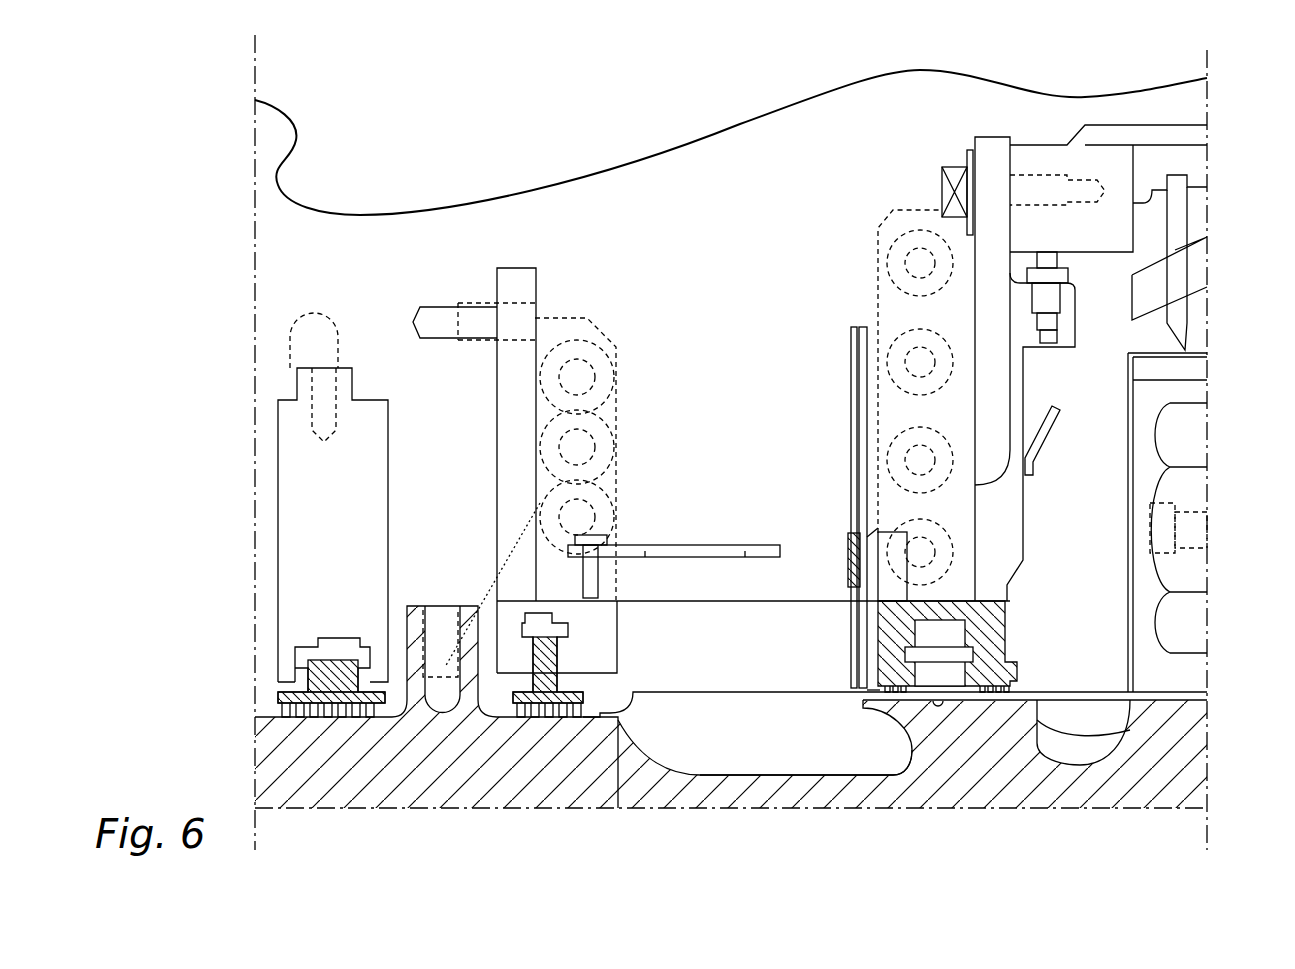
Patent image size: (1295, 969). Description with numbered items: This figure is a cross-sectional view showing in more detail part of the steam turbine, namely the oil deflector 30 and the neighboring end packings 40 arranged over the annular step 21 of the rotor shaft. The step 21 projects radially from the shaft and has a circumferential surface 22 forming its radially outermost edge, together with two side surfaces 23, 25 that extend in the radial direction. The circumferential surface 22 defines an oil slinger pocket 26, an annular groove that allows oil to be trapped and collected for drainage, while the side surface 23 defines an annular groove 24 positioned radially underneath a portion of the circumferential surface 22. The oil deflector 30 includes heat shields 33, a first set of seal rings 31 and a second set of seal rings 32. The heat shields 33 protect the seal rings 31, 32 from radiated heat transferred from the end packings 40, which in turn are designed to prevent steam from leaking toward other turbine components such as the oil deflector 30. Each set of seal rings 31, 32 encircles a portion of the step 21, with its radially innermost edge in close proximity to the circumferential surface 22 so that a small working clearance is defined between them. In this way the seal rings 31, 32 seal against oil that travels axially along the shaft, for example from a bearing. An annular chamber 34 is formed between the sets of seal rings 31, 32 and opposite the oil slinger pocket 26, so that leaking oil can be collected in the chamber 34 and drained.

The annular step 21 is at (1003, 723).
The circumferential surface 22 is at (1030, 693).
The side surface 23 is at (887, 722).
The annular groove 24 is at (903, 752).
The side surface 25 is at (1130, 730).
The oil slinger pocket 26 is at (938, 712).
The oil deflector 30 is at (895, 305).
The seal rings 31 is at (880, 697).
The seal rings 32 is at (1013, 690).
The heat shields 33 is at (853, 373).
The annular chamber 34 is at (948, 635).
The end packings 40 is at (322, 387).